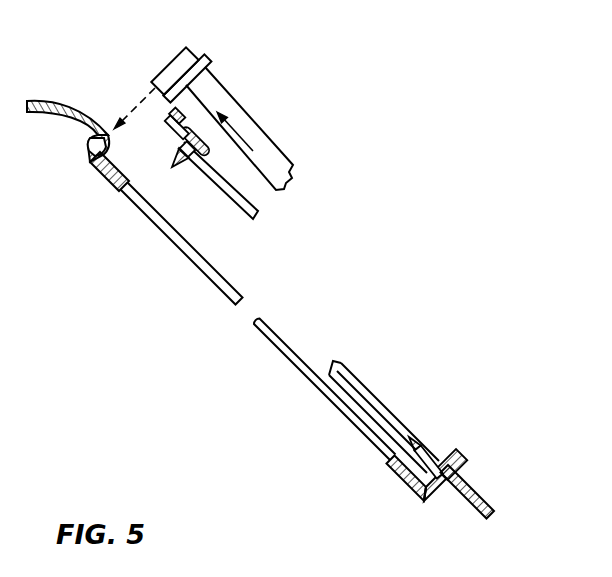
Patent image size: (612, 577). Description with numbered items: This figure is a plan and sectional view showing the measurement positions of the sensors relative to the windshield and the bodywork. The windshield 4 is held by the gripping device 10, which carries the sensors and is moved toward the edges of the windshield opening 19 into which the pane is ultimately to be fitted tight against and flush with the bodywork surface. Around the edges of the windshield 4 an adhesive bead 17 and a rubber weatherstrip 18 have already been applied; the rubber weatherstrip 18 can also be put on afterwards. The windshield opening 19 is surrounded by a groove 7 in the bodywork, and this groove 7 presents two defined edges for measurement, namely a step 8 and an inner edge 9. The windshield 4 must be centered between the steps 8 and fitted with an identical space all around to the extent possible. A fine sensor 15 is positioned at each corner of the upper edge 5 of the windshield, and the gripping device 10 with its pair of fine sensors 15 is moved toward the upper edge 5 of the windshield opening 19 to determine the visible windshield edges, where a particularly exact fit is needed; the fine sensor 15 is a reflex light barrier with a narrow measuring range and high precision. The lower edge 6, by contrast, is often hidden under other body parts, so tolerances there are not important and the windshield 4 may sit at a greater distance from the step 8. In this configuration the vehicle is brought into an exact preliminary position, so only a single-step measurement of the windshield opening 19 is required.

The windshield 4 is at (258, 211).
The upper edge 5 is at (103, 106).
The lower edge 6 is at (476, 475).
The groove 7 is at (86, 170).
The step 8 is at (87, 147).
The inner edge 9 is at (124, 193).
The gripping device 10 is at (270, 160).
The fine sensor 15 is at (171, 70).
The adhesive bead 17 is at (186, 158).
The rubber weatherstrip 18 is at (188, 132).
The windshield opening 19 is at (148, 228).